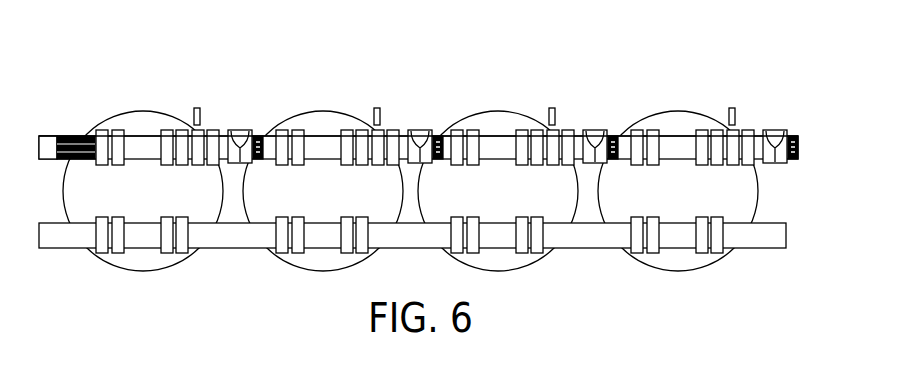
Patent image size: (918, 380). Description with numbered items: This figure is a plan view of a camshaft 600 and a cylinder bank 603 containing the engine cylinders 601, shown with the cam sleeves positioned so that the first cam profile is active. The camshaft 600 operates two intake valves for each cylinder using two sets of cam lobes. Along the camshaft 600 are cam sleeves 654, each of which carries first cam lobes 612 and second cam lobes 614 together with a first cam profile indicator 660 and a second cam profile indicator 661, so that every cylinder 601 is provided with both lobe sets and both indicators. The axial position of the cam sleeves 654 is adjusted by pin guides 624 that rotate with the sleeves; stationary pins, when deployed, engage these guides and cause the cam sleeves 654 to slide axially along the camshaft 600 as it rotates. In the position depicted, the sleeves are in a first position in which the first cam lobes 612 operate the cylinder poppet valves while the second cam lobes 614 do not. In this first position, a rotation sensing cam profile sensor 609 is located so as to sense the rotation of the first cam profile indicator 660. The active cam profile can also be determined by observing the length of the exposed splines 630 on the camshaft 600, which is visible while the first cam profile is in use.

The camshaft 600 is at (48, 135).
The cylinders 601 is at (152, 271).
The cylinder bank 603 is at (118, 27).
The rotation sensing cam profile sensor 609 is at (197, 108).
The first cam lobes 612 is at (166, 130).
The second cam lobes 614 is at (183, 130).
The pin guides 624 is at (240, 130).
The exposed splines 630 is at (75, 136).
The cam sleeves 654 is at (148, 136).
The first cam profile indicator 660 is at (198, 165).
The second cam profile indicator 661 is at (213, 165).